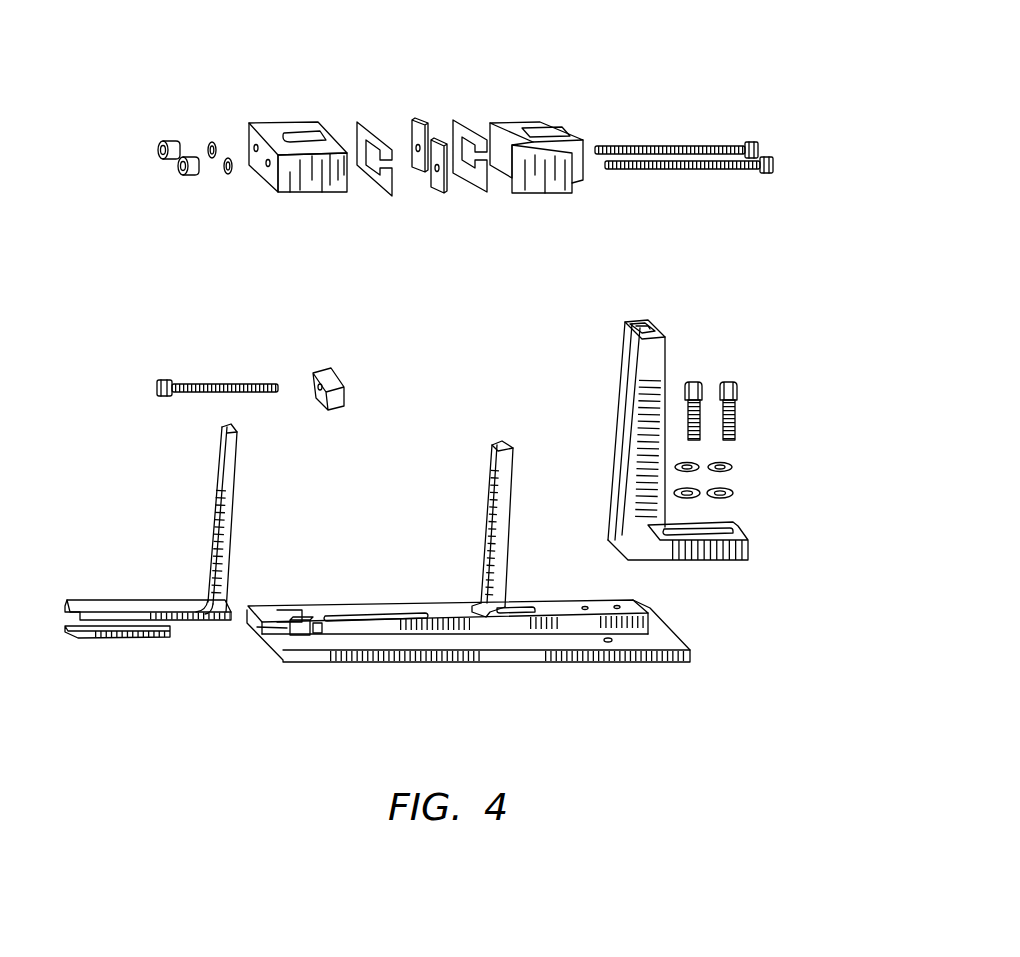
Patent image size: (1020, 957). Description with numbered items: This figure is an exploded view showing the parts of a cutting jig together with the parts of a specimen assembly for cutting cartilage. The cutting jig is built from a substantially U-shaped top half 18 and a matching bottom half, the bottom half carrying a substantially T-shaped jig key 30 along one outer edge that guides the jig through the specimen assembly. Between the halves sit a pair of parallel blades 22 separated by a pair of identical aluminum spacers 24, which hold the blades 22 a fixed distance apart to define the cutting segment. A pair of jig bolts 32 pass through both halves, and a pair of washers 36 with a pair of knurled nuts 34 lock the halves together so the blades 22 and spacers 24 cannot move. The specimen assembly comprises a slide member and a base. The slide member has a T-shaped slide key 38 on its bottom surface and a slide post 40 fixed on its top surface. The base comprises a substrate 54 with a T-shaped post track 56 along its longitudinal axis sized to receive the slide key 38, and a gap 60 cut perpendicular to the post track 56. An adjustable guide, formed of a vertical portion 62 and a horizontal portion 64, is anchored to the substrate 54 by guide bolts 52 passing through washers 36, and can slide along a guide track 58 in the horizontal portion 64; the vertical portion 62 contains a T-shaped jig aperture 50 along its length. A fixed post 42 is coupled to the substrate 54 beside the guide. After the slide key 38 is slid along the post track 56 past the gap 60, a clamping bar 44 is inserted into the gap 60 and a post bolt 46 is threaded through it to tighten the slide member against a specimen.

The top half 18 is at (290, 123).
The parallel blades 22 is at (358, 122).
The aluminum spacers 24 is at (417, 120).
The jig key 30 is at (540, 126).
The jig bolts 32 is at (767, 163).
The knurled nuts 34 is at (165, 138).
The washers 36 is at (213, 142).
The slide key 38 is at (125, 635).
The slide post 40 is at (225, 495).
The fixed post 42 is at (500, 445).
The clamping bar 44 is at (345, 392).
The post bolt 46 is at (155, 388).
The jig aperture 50 is at (645, 322).
The guide bolts 52 is at (735, 382).
The substrate 54 is at (560, 643).
The post track 56 is at (345, 607).
The guide track 58 is at (735, 532).
The gap 60 is at (305, 642).
The vertical portion 62 is at (660, 345).
The horizontal portion 64 is at (745, 548).